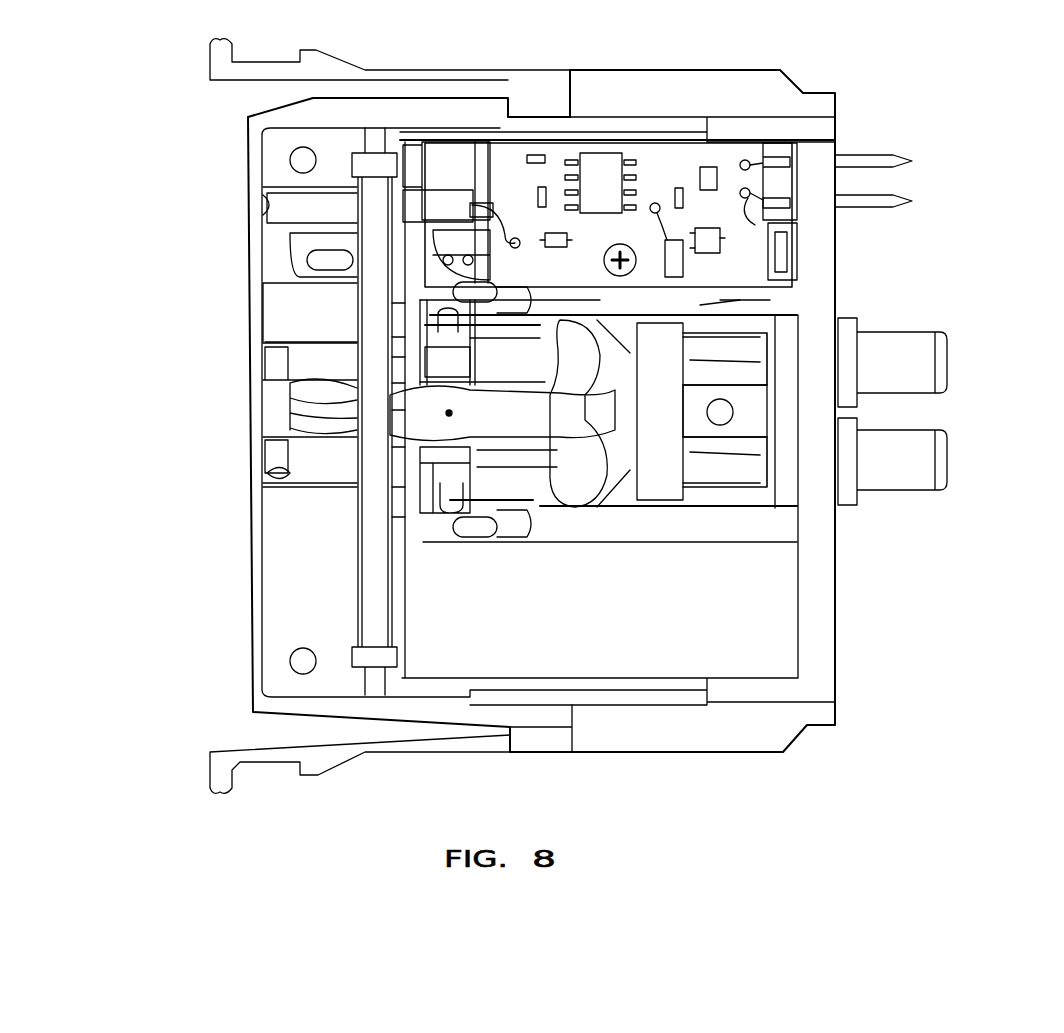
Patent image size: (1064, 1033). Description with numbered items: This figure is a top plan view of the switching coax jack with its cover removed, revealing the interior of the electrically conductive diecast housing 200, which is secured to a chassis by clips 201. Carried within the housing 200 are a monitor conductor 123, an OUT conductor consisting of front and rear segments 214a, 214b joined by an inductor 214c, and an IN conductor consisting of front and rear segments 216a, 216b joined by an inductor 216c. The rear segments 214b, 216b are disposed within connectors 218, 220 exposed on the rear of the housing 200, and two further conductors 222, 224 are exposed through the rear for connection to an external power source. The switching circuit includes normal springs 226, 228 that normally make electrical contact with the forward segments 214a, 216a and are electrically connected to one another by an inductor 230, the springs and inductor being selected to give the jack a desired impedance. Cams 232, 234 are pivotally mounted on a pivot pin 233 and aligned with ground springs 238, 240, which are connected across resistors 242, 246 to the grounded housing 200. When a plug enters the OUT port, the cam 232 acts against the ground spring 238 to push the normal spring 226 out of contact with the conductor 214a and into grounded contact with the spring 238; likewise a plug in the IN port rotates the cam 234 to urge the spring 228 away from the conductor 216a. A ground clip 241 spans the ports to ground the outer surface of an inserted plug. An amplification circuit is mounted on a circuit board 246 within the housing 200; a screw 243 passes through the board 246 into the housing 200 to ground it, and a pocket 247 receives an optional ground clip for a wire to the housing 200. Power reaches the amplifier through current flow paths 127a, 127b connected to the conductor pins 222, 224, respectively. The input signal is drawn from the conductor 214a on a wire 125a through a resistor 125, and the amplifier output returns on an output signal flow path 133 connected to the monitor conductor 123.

The housing 200 is at (238, 718).
The clips 201 is at (385, 70).
The monitor conductor 123 is at (268, 230).
The resistor 125 is at (680, 275).
The wire 125a is at (690, 300).
The current flow path 127a is at (748, 160).
The current flow path 127b is at (800, 228).
The output signal flow path 133 is at (522, 230).
The front segment of OUT conductor 214a is at (268, 380).
The rear segment of OUT conductor 214b is at (840, 305).
The inductor 214c is at (860, 365).
The front segment of IN conductor 216a is at (275, 485).
The rear segment of IN conductor 216b is at (773, 500).
The inductor 216c is at (720, 540).
The connector 218 is at (940, 395).
The connector 220 is at (945, 490).
The conductor 222 is at (897, 157).
The conductor 224 is at (905, 195).
The normal spring 226 is at (625, 290).
The normal spring 228 is at (630, 505).
The inductor 230 is at (770, 430).
The cam 232 is at (290, 400).
The pivot pin 233 is at (453, 414).
The cam 234 is at (270, 462).
The ground spring 238 is at (500, 350).
The ground spring 240 is at (525, 545).
The ground clip 241 is at (355, 320).
The resistor 242 is at (430, 318).
The screw 243 is at (600, 194).
The circuit board 246 is at (660, 170).
The pocket 247 is at (790, 275).